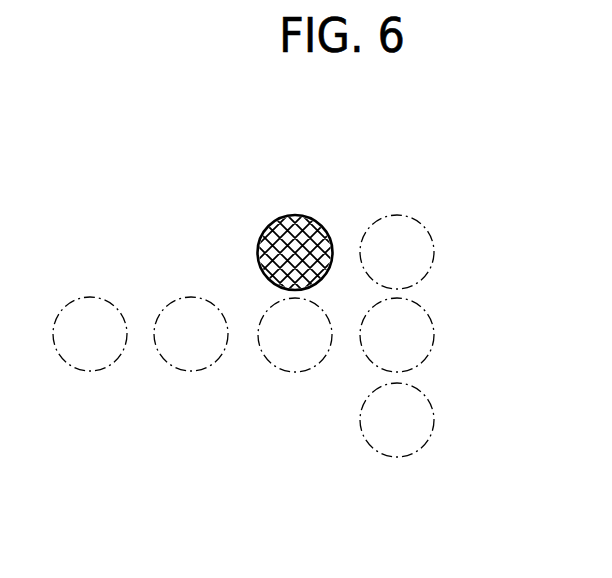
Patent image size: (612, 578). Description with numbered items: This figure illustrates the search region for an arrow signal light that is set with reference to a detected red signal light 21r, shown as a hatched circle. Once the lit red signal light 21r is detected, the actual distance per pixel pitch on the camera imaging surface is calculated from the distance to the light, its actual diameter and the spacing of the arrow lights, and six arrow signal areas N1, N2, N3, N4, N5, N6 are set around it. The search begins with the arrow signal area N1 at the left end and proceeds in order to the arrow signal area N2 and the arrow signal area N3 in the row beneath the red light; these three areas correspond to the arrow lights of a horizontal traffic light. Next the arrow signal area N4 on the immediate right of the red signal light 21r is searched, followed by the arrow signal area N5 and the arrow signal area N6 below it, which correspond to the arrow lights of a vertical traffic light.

The red signal light 21r is at (289, 211).
The arrow signal area N1 is at (77, 367).
The arrow signal area N2 is at (177, 367).
The arrow signal area N3 is at (282, 368).
The arrow signal area N4 is at (432, 245).
The arrow signal area N5 is at (432, 327).
The arrow signal area N6 is at (432, 412).